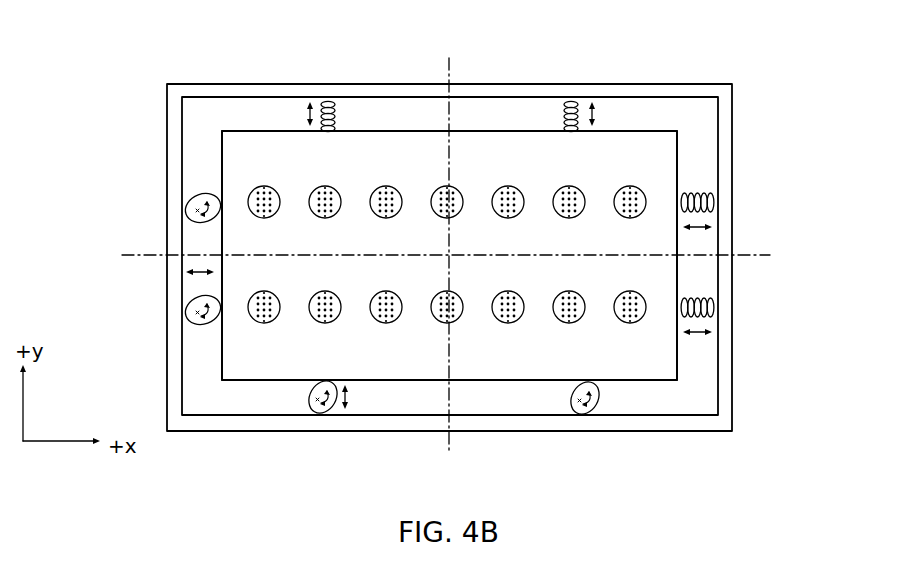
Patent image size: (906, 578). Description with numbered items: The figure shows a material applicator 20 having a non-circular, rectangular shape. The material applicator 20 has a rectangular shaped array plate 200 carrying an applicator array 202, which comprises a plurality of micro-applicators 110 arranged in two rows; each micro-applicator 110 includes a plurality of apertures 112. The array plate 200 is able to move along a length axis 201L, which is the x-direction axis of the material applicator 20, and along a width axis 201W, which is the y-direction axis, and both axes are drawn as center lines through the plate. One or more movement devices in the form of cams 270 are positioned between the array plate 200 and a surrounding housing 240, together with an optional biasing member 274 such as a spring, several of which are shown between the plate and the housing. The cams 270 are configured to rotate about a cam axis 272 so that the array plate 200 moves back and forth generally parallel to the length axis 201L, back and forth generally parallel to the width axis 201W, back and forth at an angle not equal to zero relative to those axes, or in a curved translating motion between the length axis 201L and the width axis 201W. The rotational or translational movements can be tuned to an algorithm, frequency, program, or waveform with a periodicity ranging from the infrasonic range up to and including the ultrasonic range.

The material applicator 20 is at (742, 80).
The housing 240 is at (740, 120).
The array plate 200 is at (216, 165).
The applicator array 202 is at (668, 352).
The width axis 201W is at (448, 72).
The length axis 201L is at (765, 260).
The biasing member 274 is at (563, 113).
The cam 270 is at (214, 300).
The cam axis 272 is at (196, 321).
The micro-applicator 110 is at (343, 184).
The aperture 112 is at (519, 190).